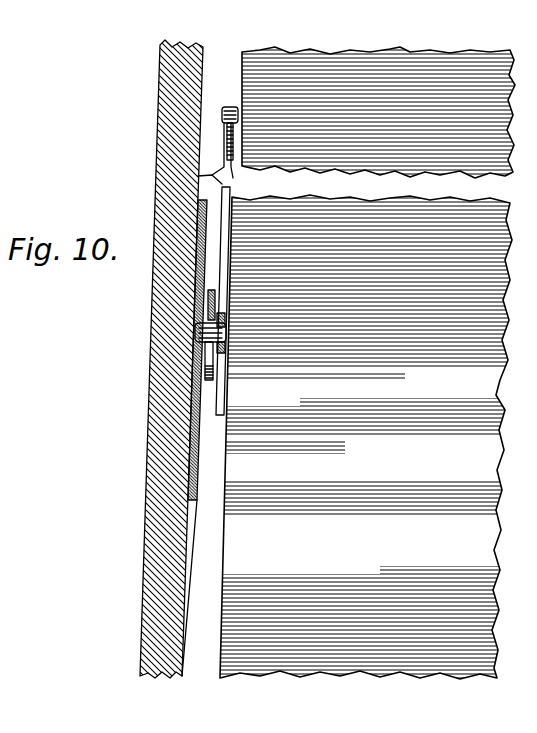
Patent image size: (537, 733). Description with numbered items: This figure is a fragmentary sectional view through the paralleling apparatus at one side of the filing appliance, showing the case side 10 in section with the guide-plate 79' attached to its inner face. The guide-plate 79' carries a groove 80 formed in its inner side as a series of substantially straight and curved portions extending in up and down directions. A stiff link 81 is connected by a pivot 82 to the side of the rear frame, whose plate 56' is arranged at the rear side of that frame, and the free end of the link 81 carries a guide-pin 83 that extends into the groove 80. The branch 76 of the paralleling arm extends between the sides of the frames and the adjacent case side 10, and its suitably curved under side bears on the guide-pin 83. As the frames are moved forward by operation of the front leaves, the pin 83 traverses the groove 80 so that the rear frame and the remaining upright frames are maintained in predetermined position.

The case side 10 is at (150, 455).
The plate 56' is at (365, 363).
The branch 76 is at (217, 302).
The guide-plate 79' is at (239, 562).
The groove 80 is at (195, 333).
The stiff link 81 is at (198, 176).
The pivot 82 is at (222, 116).
The guide-pin 83 is at (225, 335).